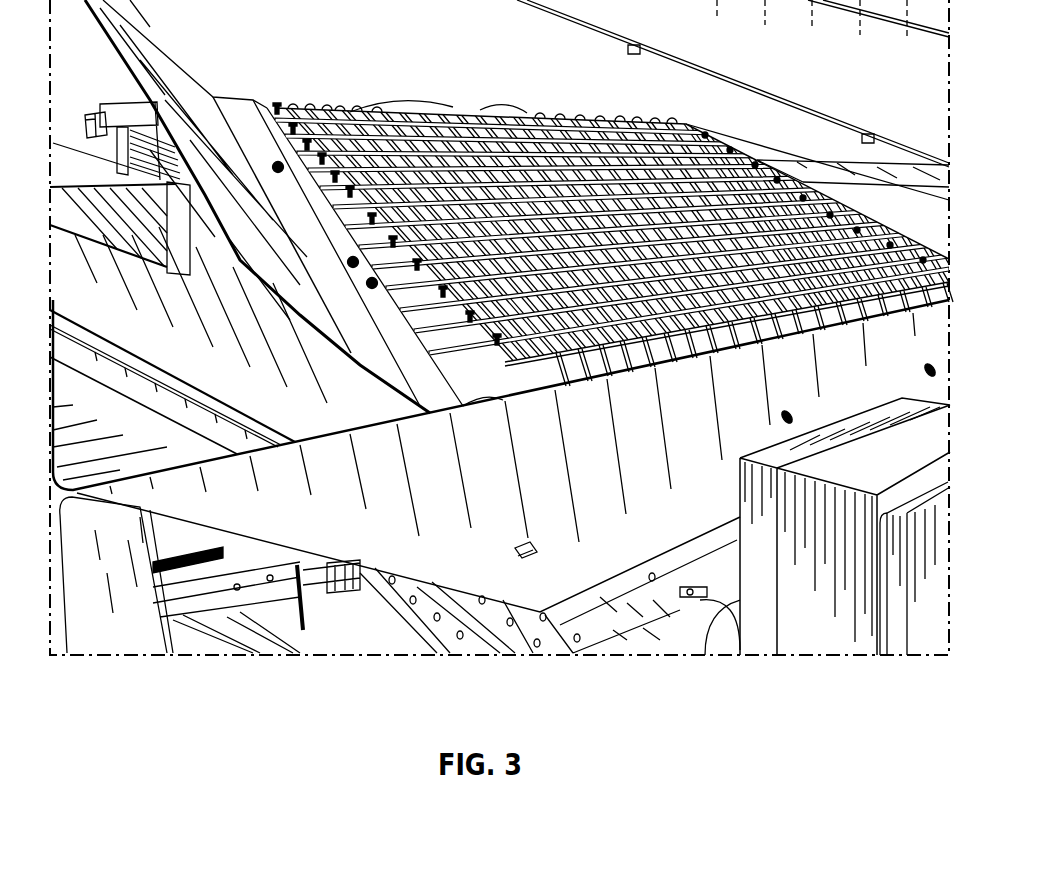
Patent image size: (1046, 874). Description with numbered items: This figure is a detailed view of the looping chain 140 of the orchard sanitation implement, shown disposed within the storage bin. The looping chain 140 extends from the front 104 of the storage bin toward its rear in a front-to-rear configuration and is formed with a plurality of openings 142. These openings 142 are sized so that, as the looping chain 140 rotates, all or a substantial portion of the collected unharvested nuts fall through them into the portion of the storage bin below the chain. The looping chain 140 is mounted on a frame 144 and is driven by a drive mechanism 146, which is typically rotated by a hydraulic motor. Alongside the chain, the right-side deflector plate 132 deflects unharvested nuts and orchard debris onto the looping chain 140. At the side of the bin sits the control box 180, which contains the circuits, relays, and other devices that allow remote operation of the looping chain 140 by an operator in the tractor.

The front 104 is at (632, 517).
The right-side deflector plate 132 is at (177, 90).
The looping chain 140 is at (480, 108).
The openings 142 is at (537, 115).
The frame 144 is at (120, 102).
The drive mechanism 146 is at (90, 123).
The control box 180 is at (828, 618).